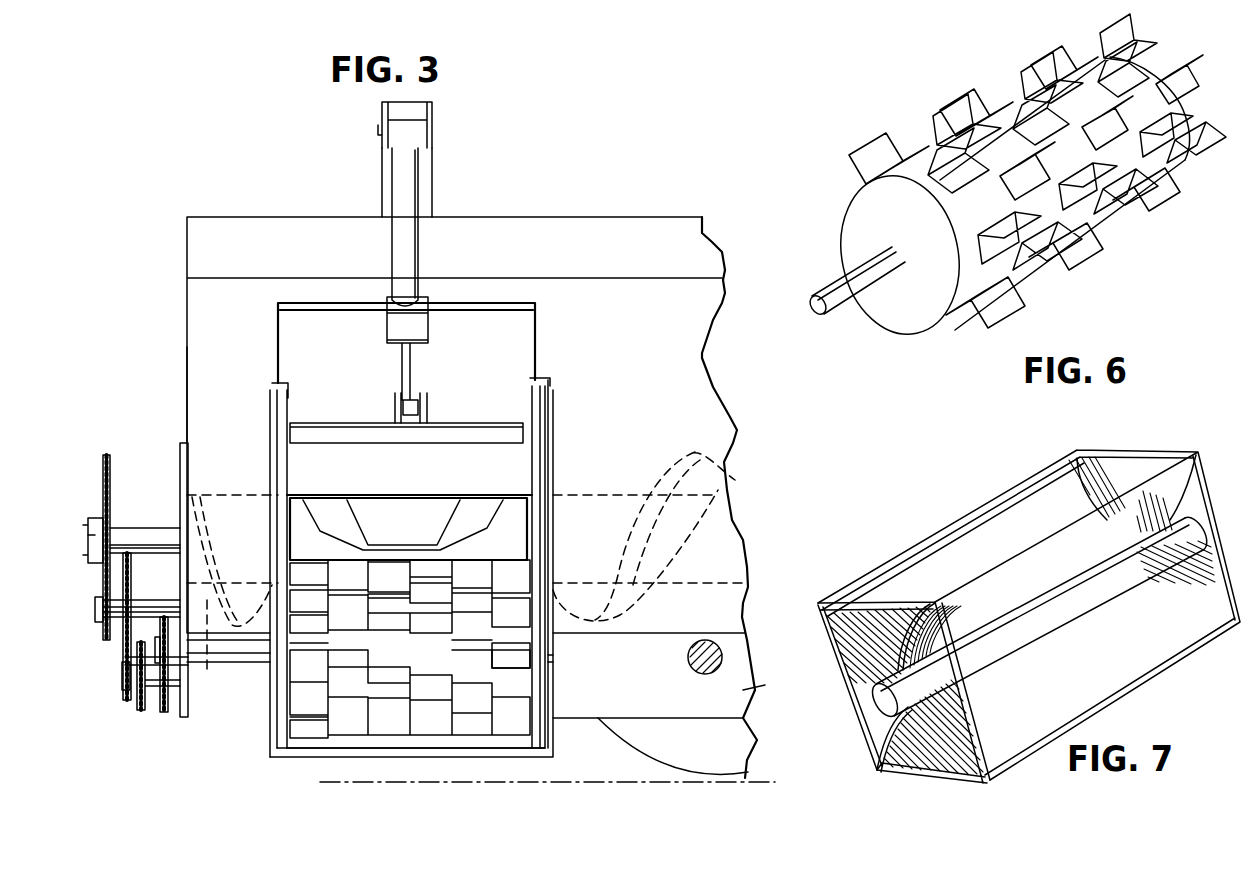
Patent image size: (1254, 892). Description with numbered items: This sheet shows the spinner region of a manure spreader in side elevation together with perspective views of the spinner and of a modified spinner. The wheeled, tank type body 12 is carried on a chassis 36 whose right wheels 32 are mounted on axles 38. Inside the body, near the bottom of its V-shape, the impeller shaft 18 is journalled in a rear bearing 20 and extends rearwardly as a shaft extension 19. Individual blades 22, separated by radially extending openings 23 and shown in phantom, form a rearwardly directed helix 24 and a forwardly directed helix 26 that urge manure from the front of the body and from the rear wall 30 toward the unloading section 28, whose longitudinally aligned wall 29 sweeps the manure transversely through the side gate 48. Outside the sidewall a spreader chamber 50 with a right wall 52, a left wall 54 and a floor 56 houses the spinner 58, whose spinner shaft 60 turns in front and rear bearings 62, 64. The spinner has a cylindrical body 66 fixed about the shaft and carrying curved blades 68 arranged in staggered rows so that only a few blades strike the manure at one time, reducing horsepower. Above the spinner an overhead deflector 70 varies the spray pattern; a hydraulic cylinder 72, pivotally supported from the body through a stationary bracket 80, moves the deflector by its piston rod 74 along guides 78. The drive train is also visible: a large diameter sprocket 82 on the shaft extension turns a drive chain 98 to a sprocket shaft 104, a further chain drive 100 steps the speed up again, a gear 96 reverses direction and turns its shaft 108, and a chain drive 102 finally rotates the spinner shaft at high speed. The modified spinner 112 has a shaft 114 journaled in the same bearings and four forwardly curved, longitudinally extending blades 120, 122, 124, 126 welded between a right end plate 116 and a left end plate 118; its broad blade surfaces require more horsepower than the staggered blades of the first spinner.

In FIG. 3, the body 12 is at (250, 217).
In FIG. 3, the impeller shaft 18 is at (170, 533).
In FIG. 3, the shaft extension 19 is at (88, 538).
In FIG. 3, the bearing 20 is at (180, 530).
In FIG. 3, the blades 22 is at (338, 498).
In FIG. 3, the radially extending openings 23 is at (300, 470).
In FIG. 3, the rearwardly directed helix 24 is at (715, 478).
In FIG. 3, the forwardly directed helix 26 is at (222, 652).
In FIG. 3, the unloading section 28 is at (465, 515).
In FIG. 3, the longitudinally aligned wall 29 is at (395, 541).
In FIG. 3, the rear wall 30 is at (187, 350).
In FIG. 3, the right wheels 32 is at (745, 745).
In FIG. 3, the chassis 36 is at (745, 690).
In FIG. 3, the axles 38 is at (722, 657).
In FIG. 3, the side opening or gate 48 is at (307, 528).
In FIG. 3, the spreader chamber 50 is at (280, 700).
In FIG. 3, the right wall 52 is at (553, 558).
In FIG. 3, the left wall 54 is at (278, 548).
In FIG. 3, the floor or base wall 56 is at (362, 750).
In FIG. 3, the spinner 58 is at (430, 718).
In FIG. 6, the spinner 58 is at (1111, 266).
In FIG. 3, the spinner shaft 60 is at (228, 663).
In FIG. 6, the spinner shaft 60 is at (860, 305).
In FIG. 3, the front bearing 62 is at (553, 658).
In FIG. 3, the rear bearing 64 is at (277, 700).
In FIG. 6, the cylindrical body 66 is at (915, 320).
In FIG. 3, the curved blades 68 is at (310, 730).
In FIG. 6, the curved blades 68 is at (870, 140).
In FIG. 3, the overhead deflector 70 is at (463, 423).
In FIG. 3, the hydraulic cylinder 72 is at (423, 232).
In FIG. 3, the piston rod 74 is at (412, 370).
In FIG. 3, the guides 78 is at (540, 400).
In FIG. 3, the stationary bracket 80 is at (415, 103).
In FIG. 3, the large diameter sprocket 82 is at (95, 522).
In FIG. 3, the gear 96 is at (141, 712).
In FIG. 3, the drive chain 98 is at (103, 472).
In FIG. 3, the chain drive 100 is at (120, 665).
In FIG. 3, the chain drive 102 is at (165, 715).
In FIG. 3, the sprocket shaft 104 is at (95, 605).
In FIG. 3, the shaft 108 is at (122, 680).
In FIG. 7, the modified spinner 112 is at (998, 488).
In FIG. 7, the shaft 114 is at (1055, 595).
In FIG. 7, the right end plate 116 is at (1166, 469).
In FIG. 7, the left end plate 118 is at (847, 697).
In FIG. 7, the blade 120 is at (850, 628).
In FIG. 7, the blade 122 is at (892, 583).
In FIG. 7, the blade 124 is at (963, 693).
In FIG. 7, the blade 126 is at (885, 770).